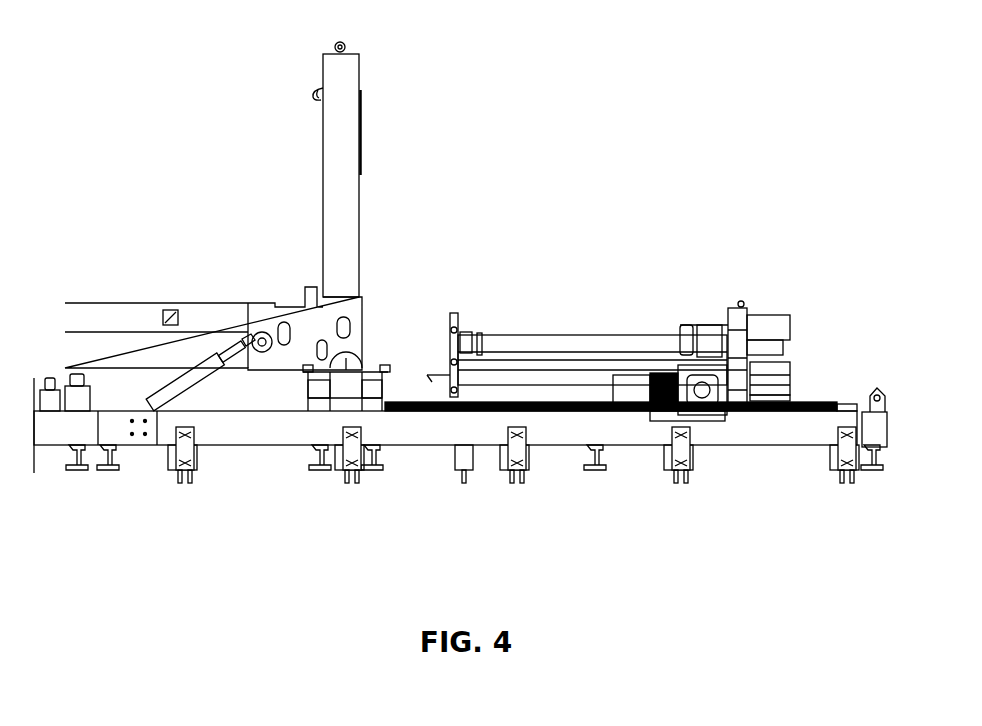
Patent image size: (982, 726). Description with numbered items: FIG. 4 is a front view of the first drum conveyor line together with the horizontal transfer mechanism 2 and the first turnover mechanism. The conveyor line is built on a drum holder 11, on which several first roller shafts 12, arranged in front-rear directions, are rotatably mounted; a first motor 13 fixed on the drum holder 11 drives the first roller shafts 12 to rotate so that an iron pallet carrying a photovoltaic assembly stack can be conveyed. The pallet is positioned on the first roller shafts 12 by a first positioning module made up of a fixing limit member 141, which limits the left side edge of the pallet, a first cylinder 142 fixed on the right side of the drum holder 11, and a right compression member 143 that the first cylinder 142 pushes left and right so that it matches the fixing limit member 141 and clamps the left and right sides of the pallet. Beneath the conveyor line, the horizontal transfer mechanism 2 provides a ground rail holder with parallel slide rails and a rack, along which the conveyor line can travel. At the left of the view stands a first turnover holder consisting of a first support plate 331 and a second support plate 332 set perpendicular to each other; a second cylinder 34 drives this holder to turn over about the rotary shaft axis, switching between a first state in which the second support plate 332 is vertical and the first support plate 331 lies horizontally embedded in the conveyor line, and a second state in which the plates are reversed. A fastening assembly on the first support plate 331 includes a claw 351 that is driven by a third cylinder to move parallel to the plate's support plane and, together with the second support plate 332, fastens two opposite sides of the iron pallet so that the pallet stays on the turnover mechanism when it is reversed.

The horizontal transfer mechanism 2 is at (770, 425).
The drum holder 11 is at (497, 380).
The first roller shafts 12 is at (583, 340).
The first motor 13 is at (634, 395).
The second cylinders 34 is at (195, 387).
The fixing limit member 141 is at (478, 333).
The first cylinder 142 is at (775, 318).
The right compression member 143 is at (692, 330).
The first support plate 331 is at (348, 143).
The second support plate 332 is at (107, 302).
The claw 351 is at (315, 93).